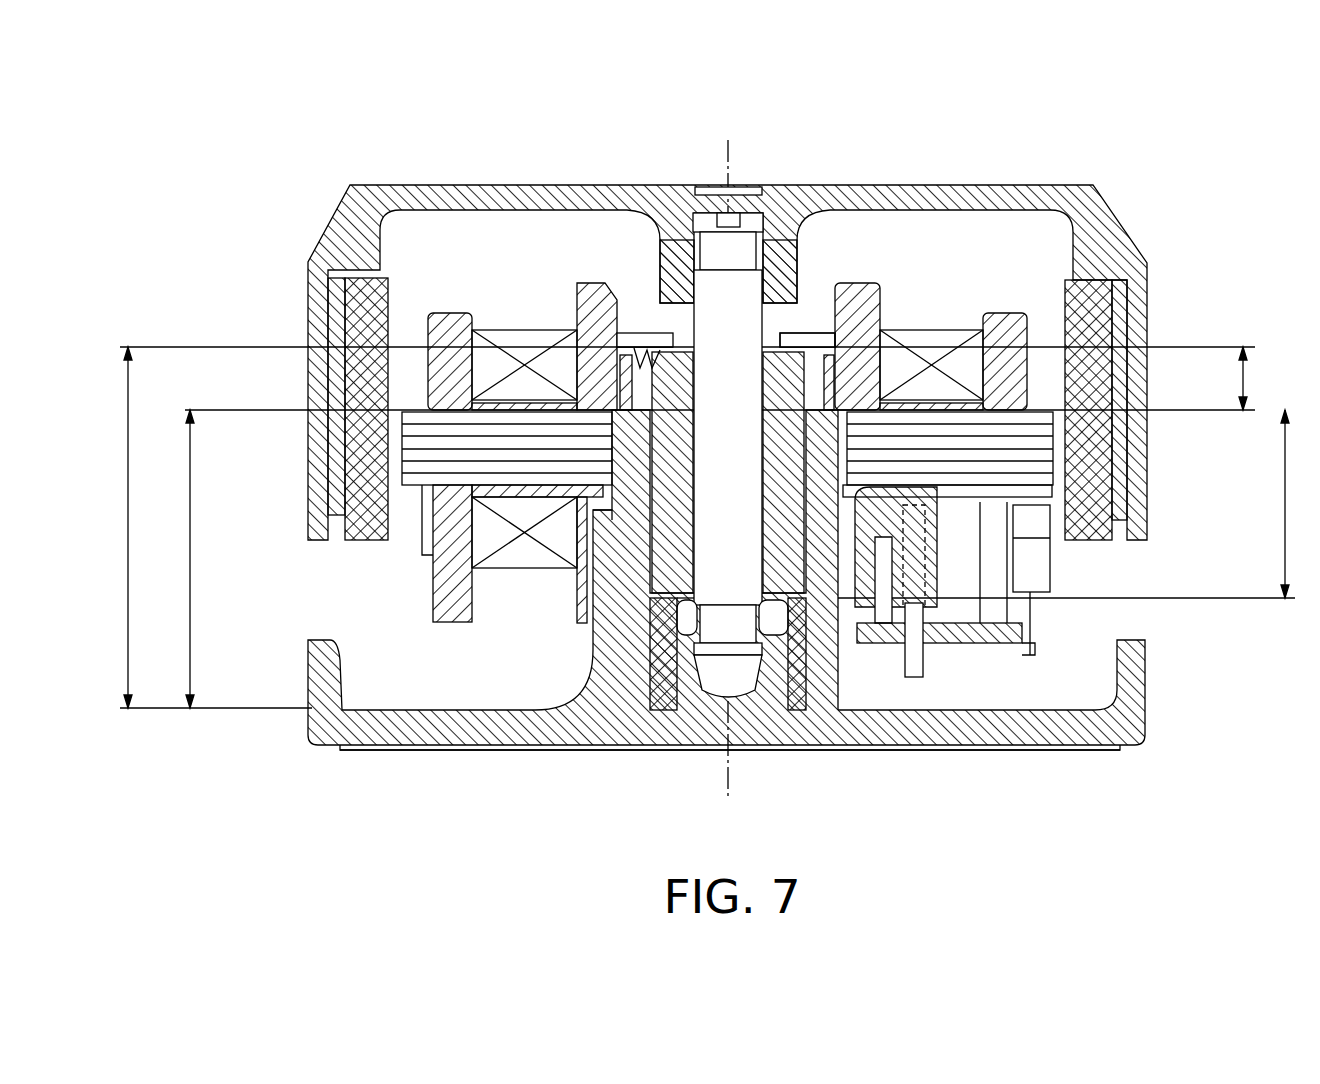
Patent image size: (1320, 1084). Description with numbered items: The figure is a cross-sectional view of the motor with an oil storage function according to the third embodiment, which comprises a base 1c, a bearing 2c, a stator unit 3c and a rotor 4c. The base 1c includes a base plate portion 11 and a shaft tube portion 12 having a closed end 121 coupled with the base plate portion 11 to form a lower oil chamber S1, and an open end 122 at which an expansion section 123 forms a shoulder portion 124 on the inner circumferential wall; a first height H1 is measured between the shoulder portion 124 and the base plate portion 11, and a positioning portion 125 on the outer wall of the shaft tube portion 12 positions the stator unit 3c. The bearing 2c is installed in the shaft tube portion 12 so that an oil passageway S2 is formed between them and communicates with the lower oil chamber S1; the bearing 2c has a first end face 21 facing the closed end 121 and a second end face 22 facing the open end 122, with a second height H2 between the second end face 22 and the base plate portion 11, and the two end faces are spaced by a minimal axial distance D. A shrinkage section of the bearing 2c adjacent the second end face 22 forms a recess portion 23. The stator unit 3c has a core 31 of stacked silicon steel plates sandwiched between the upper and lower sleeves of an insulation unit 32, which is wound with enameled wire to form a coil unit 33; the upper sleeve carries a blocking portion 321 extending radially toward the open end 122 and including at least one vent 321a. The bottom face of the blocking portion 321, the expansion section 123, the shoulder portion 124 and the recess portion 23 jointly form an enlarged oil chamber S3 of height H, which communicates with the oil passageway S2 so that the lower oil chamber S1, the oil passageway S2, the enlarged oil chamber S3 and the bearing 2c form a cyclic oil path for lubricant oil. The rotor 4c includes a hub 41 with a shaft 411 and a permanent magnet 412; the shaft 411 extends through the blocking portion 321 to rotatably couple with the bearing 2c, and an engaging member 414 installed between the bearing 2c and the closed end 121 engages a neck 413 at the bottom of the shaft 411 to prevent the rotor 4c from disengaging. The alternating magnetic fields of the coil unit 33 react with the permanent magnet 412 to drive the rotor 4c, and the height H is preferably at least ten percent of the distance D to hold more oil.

The base 1c is at (1083, 768).
The base plate portion 11 is at (392, 708).
The shaft tube portion 12 is at (612, 450).
The closed end 121 is at (790, 757).
The open end 122 is at (640, 352).
The expansion section 123 is at (828, 400).
The shoulder portion 124 is at (790, 340).
The positioning portion 125 is at (850, 560).
The bearing 2c is at (813, 715).
The first end face 21 is at (676, 632).
The second end face 22 is at (790, 330).
The recess portion 23 is at (665, 340).
The stator unit 3c is at (485, 290).
The core 31 is at (1048, 443).
The insulation unit 32 is at (880, 320).
The blocking portion 321 is at (700, 335).
The vent 321a is at (835, 340).
The coil unit 33 is at (937, 330).
The rotor 4c is at (1035, 172).
The hub 41 is at (347, 193).
The shaft 411 is at (710, 300).
The permanent magnet 412 is at (1087, 533).
The neck 413 is at (715, 635).
The engaging member 414 is at (783, 615).
The lower oil chamber S1 is at (672, 690).
The oil passageway S2 is at (645, 513).
The enlarged oil chamber S3 is at (622, 335).
The height H is at (1255, 378).
The first height H1 is at (172, 559).
The second height H2 is at (110, 527).
The minimal axial distance D is at (1294, 504).